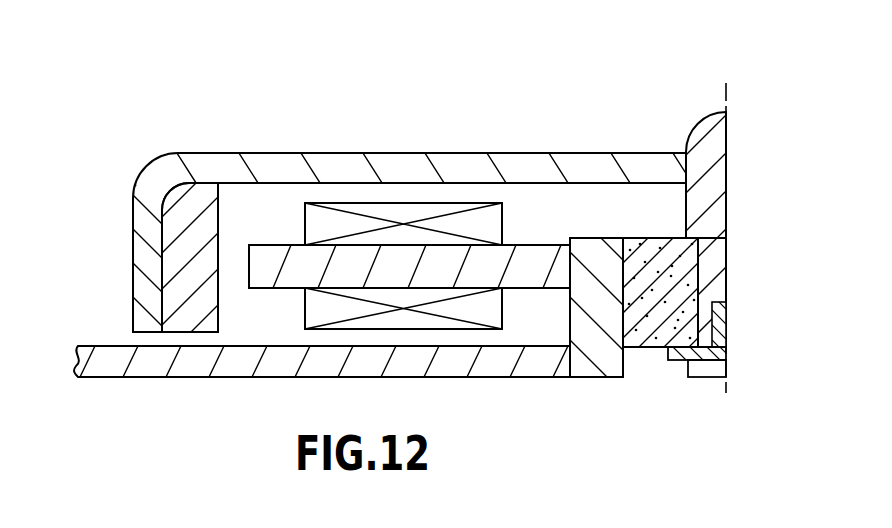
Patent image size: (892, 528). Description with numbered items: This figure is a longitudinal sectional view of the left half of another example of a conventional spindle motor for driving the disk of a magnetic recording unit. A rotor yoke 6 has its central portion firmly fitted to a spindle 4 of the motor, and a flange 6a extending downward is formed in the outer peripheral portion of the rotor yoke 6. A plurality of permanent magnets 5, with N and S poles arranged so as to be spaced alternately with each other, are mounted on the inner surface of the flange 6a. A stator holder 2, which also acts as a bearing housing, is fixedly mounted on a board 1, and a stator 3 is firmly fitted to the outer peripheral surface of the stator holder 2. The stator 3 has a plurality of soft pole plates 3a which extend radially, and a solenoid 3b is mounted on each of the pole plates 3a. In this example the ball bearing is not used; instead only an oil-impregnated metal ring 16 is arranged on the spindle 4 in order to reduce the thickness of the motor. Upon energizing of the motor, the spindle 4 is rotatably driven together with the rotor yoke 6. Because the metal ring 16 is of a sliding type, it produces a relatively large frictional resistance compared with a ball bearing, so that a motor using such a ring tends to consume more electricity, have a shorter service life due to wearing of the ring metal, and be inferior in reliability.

The board 1 is at (298, 366).
The stator holder 2 is at (593, 358).
The stator 3 is at (399, 216).
The soft pole plate 3a is at (267, 250).
The solenoid 3b is at (348, 217).
The spindle 4 is at (724, 158).
The permanent magnet 5 is at (177, 227).
The rotor yoke 6 is at (390, 235).
The flange 6a is at (145, 273).
The oil-impregnated metal ring 16 is at (690, 287).